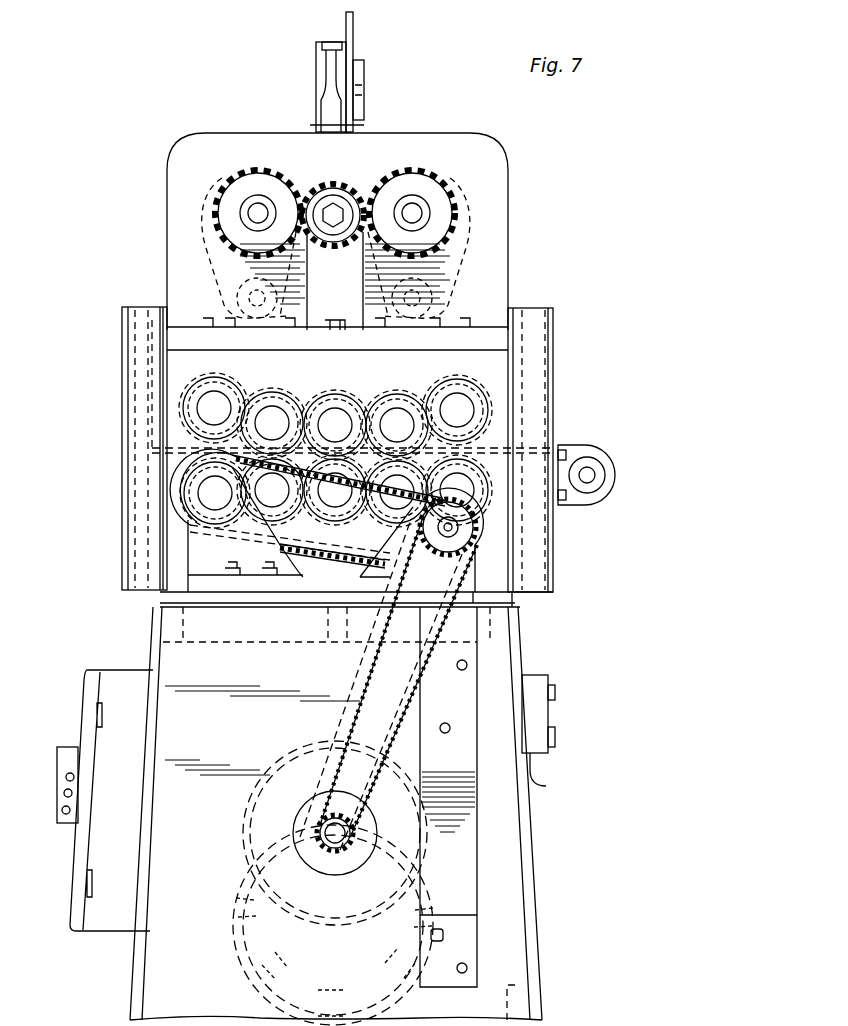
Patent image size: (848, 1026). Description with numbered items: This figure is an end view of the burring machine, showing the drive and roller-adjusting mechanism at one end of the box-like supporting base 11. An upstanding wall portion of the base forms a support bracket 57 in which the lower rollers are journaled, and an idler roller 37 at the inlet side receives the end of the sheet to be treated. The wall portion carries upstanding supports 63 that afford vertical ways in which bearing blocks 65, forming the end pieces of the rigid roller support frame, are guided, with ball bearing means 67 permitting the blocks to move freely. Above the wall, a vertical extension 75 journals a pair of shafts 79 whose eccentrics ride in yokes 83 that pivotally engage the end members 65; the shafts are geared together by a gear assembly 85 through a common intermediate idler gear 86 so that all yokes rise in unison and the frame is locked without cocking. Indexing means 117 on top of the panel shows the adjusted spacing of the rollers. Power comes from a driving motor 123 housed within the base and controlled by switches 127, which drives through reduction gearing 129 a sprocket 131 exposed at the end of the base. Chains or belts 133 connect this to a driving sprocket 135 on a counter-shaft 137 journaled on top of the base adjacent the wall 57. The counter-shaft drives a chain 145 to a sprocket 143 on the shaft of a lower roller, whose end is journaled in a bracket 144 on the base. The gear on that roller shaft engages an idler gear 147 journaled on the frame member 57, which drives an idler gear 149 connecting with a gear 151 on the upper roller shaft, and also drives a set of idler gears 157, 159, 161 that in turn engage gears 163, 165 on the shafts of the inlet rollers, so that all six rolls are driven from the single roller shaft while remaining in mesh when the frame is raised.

The supporting base 11 is at (135, 990).
The idler roller 37 is at (598, 477).
The support bracket 57 is at (495, 566).
The upstanding supports 63 is at (125, 369).
The bearing blocks 65 is at (148, 350).
The ball bearing means 67 is at (138, 424).
The vertical extension 75 is at (497, 172).
The shafts 79 is at (260, 210).
The yokes 83 is at (222, 275).
The gear assembly 85 is at (198, 165).
The intermediate idler gear 86 is at (345, 182).
The indexing means 117 is at (356, 37).
The driving motor 123 is at (243, 890).
The switches 127 is at (540, 718).
The reduction gearing 129 is at (305, 784).
The sprocket 131 is at (340, 850).
The chains or belts 133 is at (372, 688).
The driving sprocket 135 is at (470, 540).
The counter-shaft 137 is at (470, 530).
The sprocket 143 is at (190, 520).
The bracket 144 is at (195, 557).
The chain 145 is at (325, 562).
The idler gear 147 is at (306, 445).
The idler gear 149 is at (278, 402).
The gear 151 is at (207, 392).
The idler gear 157 is at (342, 402).
The idler gear 159 is at (382, 520).
The idler gear 161 is at (400, 394).
The gear 163 is at (490, 460).
The gear 165 is at (460, 380).